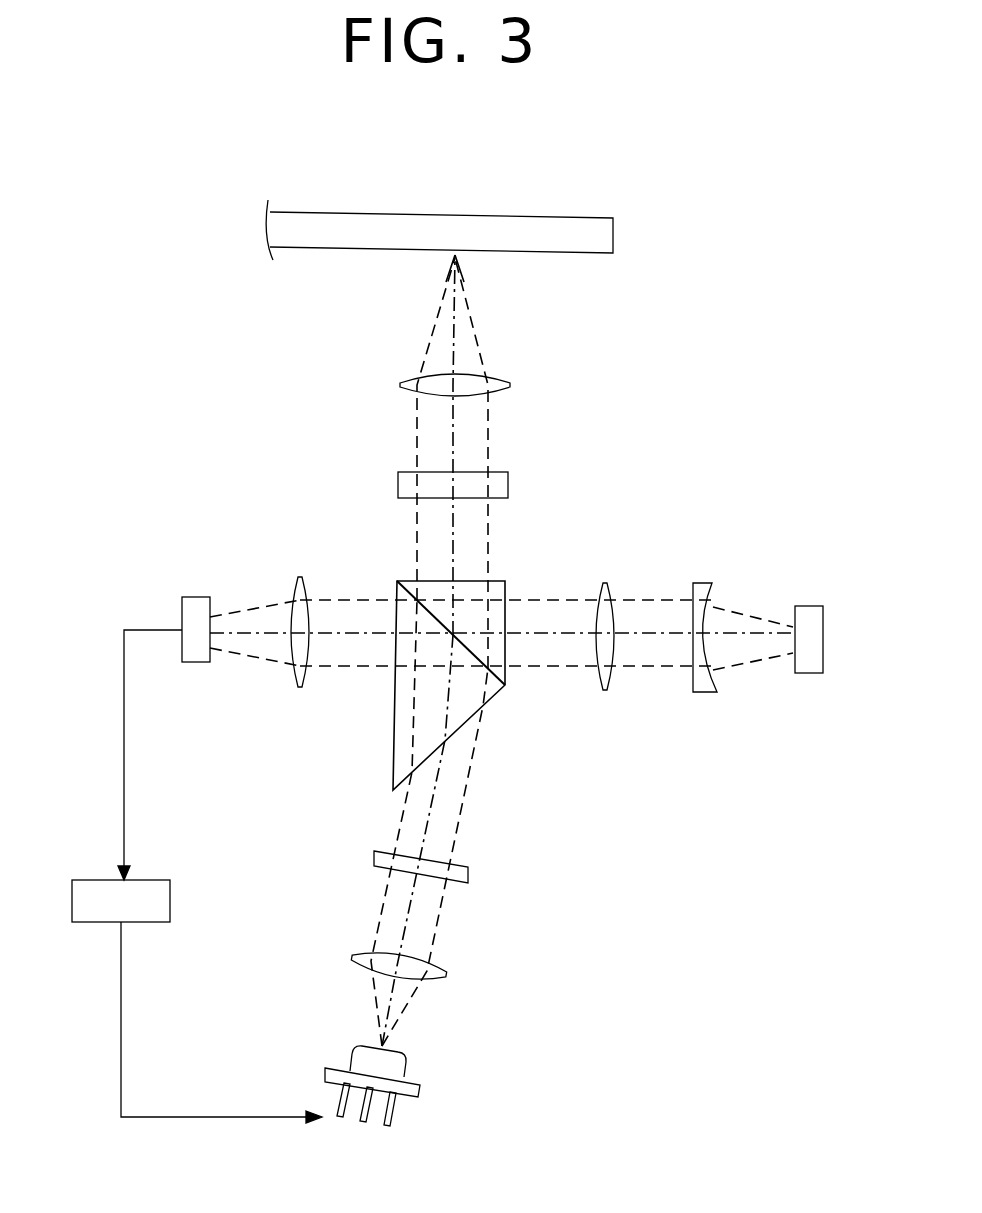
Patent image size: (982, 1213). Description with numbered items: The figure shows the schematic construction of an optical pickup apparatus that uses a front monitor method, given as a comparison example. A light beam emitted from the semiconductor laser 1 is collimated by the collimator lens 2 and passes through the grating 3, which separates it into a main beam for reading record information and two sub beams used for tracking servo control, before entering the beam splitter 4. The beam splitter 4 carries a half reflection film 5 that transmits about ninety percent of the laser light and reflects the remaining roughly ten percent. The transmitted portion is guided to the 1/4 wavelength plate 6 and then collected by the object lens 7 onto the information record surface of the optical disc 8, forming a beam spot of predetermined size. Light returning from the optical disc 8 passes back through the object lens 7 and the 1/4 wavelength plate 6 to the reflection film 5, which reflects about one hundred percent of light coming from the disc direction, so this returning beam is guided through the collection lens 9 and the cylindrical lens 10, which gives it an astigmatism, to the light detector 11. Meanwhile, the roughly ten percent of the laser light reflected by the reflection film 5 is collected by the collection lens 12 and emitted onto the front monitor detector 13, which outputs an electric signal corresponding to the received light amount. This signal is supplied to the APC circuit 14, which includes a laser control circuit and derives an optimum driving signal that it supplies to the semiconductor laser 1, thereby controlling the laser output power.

The semiconductor laser 1 is at (327, 1068).
The collimator lens 2 is at (445, 970).
The grating 3 is at (468, 867).
The beam splitter 4 is at (393, 790).
The half reflection film 5 is at (505, 685).
The 1/4 wavelength plate 6 is at (508, 486).
The object lens 7 is at (510, 385).
The optical disc 8 is at (587, 217).
The collection lens 9 is at (610, 583).
The cylindrical lens 10 is at (717, 587).
The light detector 11 is at (813, 606).
The collection lens 12 is at (298, 577).
The front monitor detector 13 is at (187, 597).
The APC circuit 14 is at (173, 882).